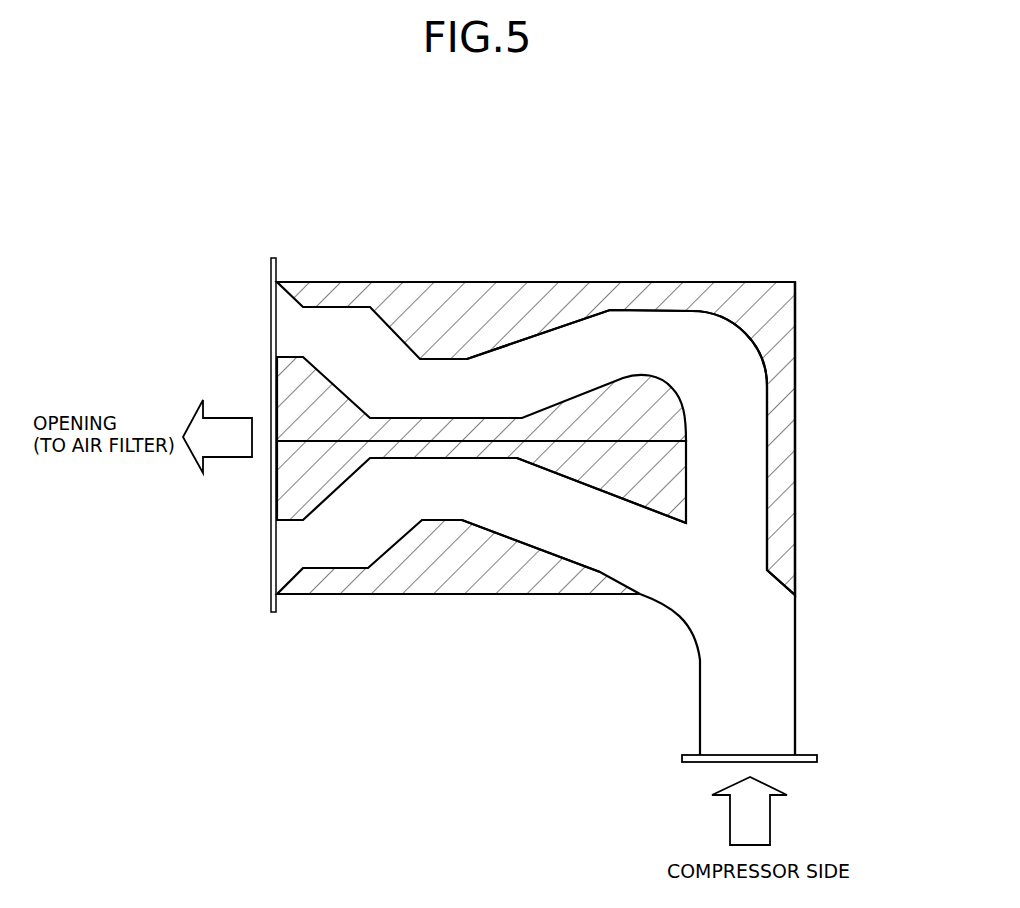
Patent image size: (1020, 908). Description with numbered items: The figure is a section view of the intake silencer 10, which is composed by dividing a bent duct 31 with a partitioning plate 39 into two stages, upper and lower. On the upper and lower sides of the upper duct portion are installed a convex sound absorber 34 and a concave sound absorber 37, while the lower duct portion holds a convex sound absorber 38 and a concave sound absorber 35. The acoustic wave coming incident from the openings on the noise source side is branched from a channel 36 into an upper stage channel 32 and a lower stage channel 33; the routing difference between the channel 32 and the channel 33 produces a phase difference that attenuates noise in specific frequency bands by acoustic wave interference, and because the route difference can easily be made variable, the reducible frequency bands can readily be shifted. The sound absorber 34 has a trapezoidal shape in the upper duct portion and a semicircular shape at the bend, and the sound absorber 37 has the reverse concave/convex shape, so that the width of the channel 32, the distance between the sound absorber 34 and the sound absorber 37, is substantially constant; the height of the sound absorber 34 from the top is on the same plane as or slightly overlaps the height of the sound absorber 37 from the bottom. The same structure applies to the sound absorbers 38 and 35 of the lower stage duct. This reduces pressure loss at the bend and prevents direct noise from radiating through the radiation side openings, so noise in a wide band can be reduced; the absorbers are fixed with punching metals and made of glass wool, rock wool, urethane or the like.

The intake silencer 10 is at (814, 379).
The bent duct 31 is at (725, 280).
The upper stage channel 32 is at (587, 338).
The lower stage channel 33 is at (509, 495).
The convex sound absorber 34 is at (445, 303).
The concave sound absorber 35 is at (441, 574).
The channel 36 is at (780, 663).
The concave sound absorber 37 is at (277, 384).
The convex sound absorber 38 is at (277, 480).
The partitioning plate 39 is at (322, 444).